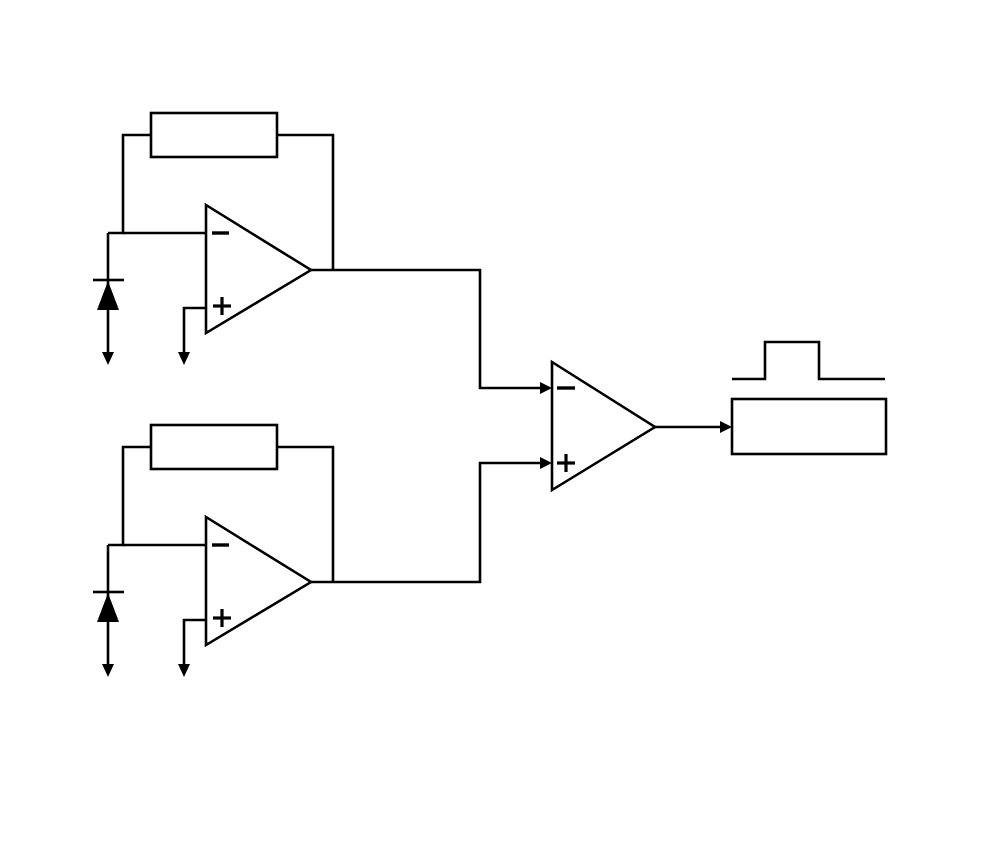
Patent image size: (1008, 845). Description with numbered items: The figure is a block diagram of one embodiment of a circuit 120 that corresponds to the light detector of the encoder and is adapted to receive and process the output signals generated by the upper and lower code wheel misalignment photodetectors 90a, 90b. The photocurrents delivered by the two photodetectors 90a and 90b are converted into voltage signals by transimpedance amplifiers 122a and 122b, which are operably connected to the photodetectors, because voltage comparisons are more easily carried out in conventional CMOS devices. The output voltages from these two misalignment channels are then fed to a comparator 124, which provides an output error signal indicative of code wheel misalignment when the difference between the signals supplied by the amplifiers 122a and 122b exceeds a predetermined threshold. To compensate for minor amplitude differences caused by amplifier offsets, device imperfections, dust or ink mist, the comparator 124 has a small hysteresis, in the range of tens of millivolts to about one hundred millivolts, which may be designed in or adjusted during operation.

The circuit 120 is at (644, 85).
The transimpedance amplifier 122a is at (360, 132).
The transimpedance amplifier 122b is at (320, 432).
The comparator 124 is at (602, 402).
The upper code wheel misalignment photodetector 90a is at (88, 334).
The lower code wheel misalignment photodetector 90b is at (90, 651).